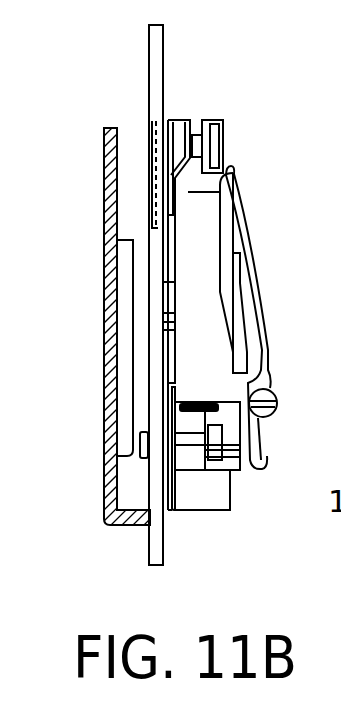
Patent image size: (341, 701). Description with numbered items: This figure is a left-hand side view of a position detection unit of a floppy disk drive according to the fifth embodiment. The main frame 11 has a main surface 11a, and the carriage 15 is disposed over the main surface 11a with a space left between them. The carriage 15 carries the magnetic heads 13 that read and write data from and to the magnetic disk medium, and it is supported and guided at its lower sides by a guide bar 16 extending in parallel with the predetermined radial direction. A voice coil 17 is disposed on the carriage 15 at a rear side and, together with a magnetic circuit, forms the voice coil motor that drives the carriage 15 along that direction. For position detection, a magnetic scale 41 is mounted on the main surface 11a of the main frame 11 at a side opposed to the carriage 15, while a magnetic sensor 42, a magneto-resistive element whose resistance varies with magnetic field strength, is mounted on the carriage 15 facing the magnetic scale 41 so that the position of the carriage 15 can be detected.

The main frame 11 is at (108, 493).
The main surface 11a is at (122, 176).
The magnetic heads 13 is at (194, 130).
The carriage 15 is at (237, 474).
The guide bars 16 is at (163, 47).
The voice coils 17 is at (195, 488).
The magnetic scale 41 is at (124, 317).
The magnetic sensor 42 is at (143, 460).